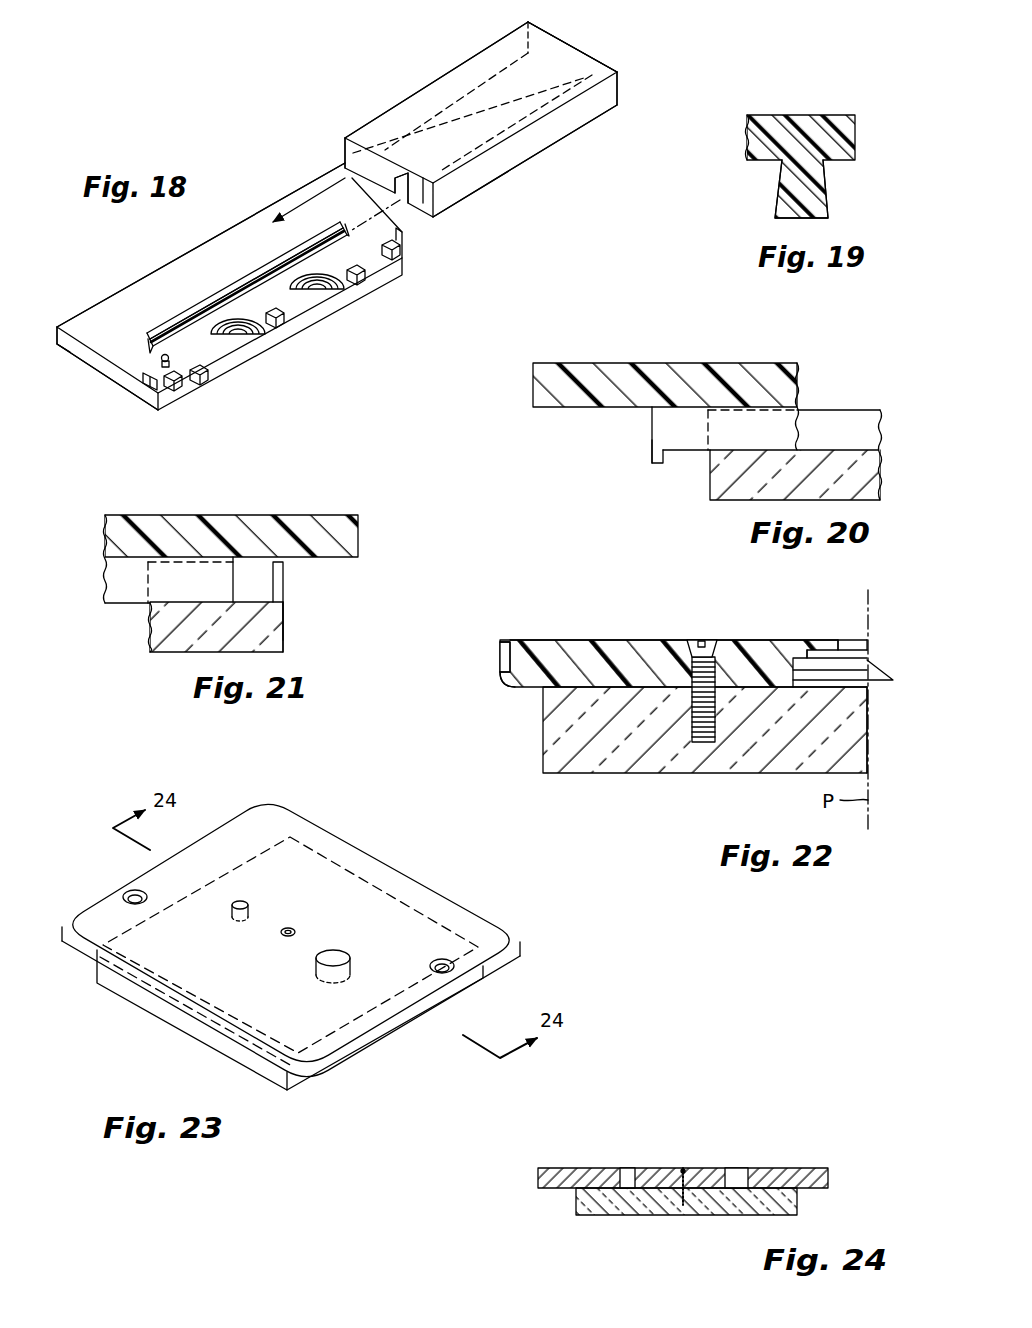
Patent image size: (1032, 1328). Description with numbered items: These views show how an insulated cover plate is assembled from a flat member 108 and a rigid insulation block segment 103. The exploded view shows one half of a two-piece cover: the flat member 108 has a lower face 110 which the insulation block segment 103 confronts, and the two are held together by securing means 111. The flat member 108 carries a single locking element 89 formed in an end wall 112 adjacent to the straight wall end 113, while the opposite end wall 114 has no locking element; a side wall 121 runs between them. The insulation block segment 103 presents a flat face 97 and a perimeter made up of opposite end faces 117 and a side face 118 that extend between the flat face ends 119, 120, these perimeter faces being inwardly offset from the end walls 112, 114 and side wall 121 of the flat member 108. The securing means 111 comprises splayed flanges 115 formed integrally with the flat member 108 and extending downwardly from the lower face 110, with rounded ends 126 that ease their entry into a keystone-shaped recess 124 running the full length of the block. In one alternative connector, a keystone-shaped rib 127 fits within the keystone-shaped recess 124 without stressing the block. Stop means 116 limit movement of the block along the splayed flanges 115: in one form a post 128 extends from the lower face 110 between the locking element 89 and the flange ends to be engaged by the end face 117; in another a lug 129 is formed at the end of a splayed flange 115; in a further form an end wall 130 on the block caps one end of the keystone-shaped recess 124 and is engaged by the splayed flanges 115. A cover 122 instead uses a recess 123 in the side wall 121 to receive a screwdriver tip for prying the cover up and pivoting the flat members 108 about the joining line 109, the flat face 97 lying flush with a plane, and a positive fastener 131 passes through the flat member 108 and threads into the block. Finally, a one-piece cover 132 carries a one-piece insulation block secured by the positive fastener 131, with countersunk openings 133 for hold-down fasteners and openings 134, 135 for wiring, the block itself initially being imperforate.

In FIG. 18, the locking element 89 is at (151, 388).
In FIG. 18, the flat face 97 is at (588, 120).
In FIG. 22, the flat face 97 is at (868, 720).
In FIG. 18, the rigid insulation block segment 103 is at (495, 47).
In FIG. 21, the rigid insulation block segment 103 is at (273, 637).
In FIG. 22, the rigid insulation block segment 103 is at (560, 735).
In FIG. 23, the rigid insulation block segment 103 is at (222, 1042).
In FIG. 24, the rigid insulation block segment 103 is at (610, 1205).
In FIG. 18, the flat member 108 is at (262, 210).
In FIG. 19, the flat member 108 is at (800, 120).
In FIG. 22, the flat member 108 is at (533, 680).
In FIG. 22, the joining line 109 is at (868, 640).
In FIG. 18, the lower face 110 is at (219, 270).
In FIG. 18, the securing means 111 is at (167, 312).
In FIG. 22, the securing means 111 is at (730, 636).
In FIG. 18, the end wall 112 is at (118, 377).
In FIG. 18, the straight wall end 113 is at (163, 398).
In FIG. 18, the opposite end wall 114 is at (403, 244).
In FIG. 18, the splayed flanges 115 is at (273, 259).
In FIG. 20, the splayed flanges 115 is at (667, 425).
In FIG. 21, the splayed flanges 115 is at (132, 590).
In FIG. 18, the stop means 116 is at (150, 360).
In FIG. 20, the stop means 116 is at (645, 464).
In FIG. 21, the stop means 116 is at (299, 618).
In FIG. 18, the end faces 117 is at (560, 37).
In FIG. 18, the side face 118 is at (410, 96).
In FIG. 18, the flat face end 119 is at (436, 190).
In FIG. 18, the flat face end 120 is at (617, 80).
In FIG. 18, the side wall 121 is at (90, 303).
In FIG. 22, the side wall 121 is at (503, 682).
In FIG. 22, the cover 122 is at (600, 632).
In FIG. 22, the recess 123 is at (500, 650).
In FIG. 18, the keystone-shaped recess 124 is at (398, 185).
In FIG. 21, the keystone-shaped recess 124 is at (260, 580).
In FIG. 18, the rounded ends 126 is at (346, 227).
In FIG. 19, the keystone-shaped rib 127 is at (826, 210).
In FIG. 18, the post 128 is at (187, 385).
In FIG. 20, the lug 129 is at (690, 467).
In FIG. 21, the end wall 130 is at (280, 600).
In FIG. 22, the positive fastener 131 is at (697, 643).
In FIG. 23, the positive fastener 131 is at (292, 930).
In FIG. 24, the positive fastener 131 is at (714, 1130).
In FIG. 23, the one-piece cover 132 is at (440, 877).
In FIG. 24, the one-piece cover 132 is at (815, 1160).
In FIG. 23, the countersunk openings 133 is at (135, 890).
In FIG. 23, the opening 134 is at (245, 903).
In FIG. 24, the opening 134 is at (628, 1168).
In FIG. 23, the opening 135 is at (335, 957).
In FIG. 24, the opening 135 is at (736, 1168).